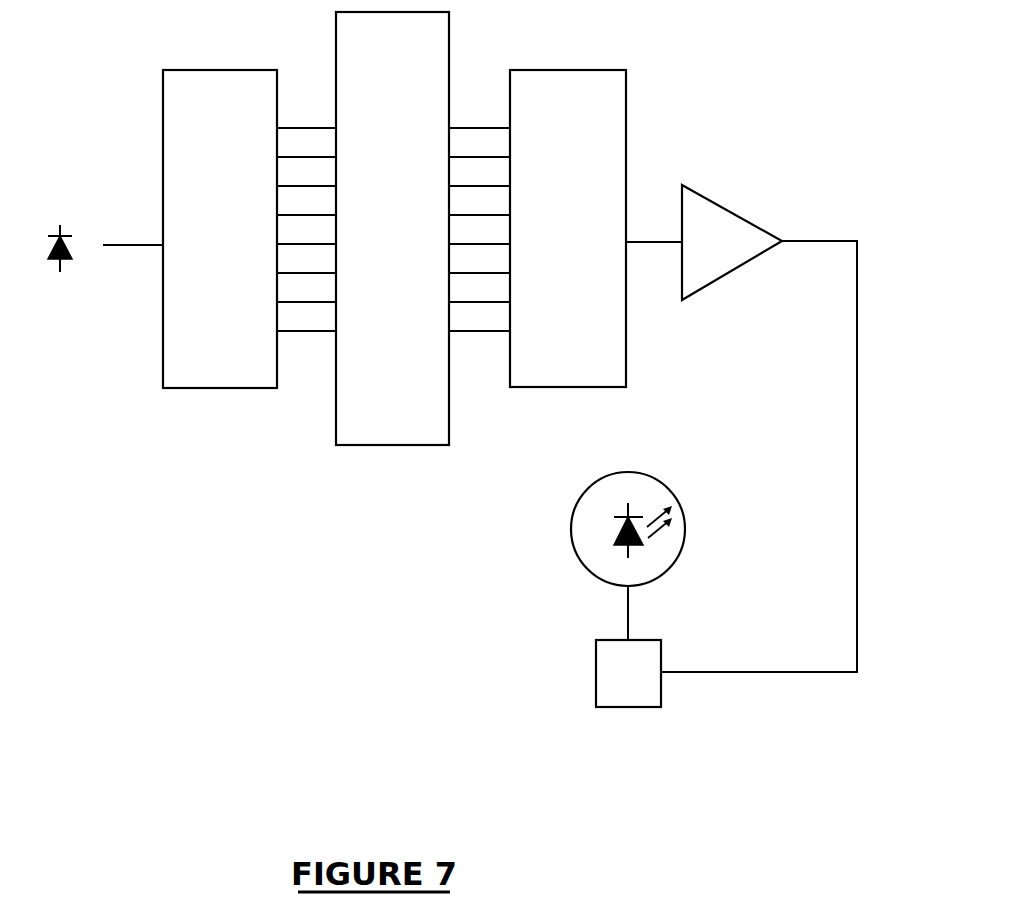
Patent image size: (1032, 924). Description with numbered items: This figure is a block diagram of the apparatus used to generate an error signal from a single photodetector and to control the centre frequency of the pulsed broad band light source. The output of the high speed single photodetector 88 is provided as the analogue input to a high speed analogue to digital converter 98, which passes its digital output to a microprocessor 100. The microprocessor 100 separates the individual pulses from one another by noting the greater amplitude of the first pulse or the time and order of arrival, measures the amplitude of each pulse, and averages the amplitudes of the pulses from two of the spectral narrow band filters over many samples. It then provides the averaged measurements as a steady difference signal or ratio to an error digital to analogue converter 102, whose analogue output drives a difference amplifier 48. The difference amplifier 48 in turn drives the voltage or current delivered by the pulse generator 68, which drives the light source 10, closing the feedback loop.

The light source 10 is at (630, 475).
The difference amplifier 48 is at (723, 232).
The pulse generator 68 is at (633, 673).
The high speed single photodetector 88 is at (65, 233).
The high speed analogue to digital converter 98 is at (235, 367).
The microprocessor 100 is at (397, 410).
The error digital to analogue converter 102 is at (583, 355).